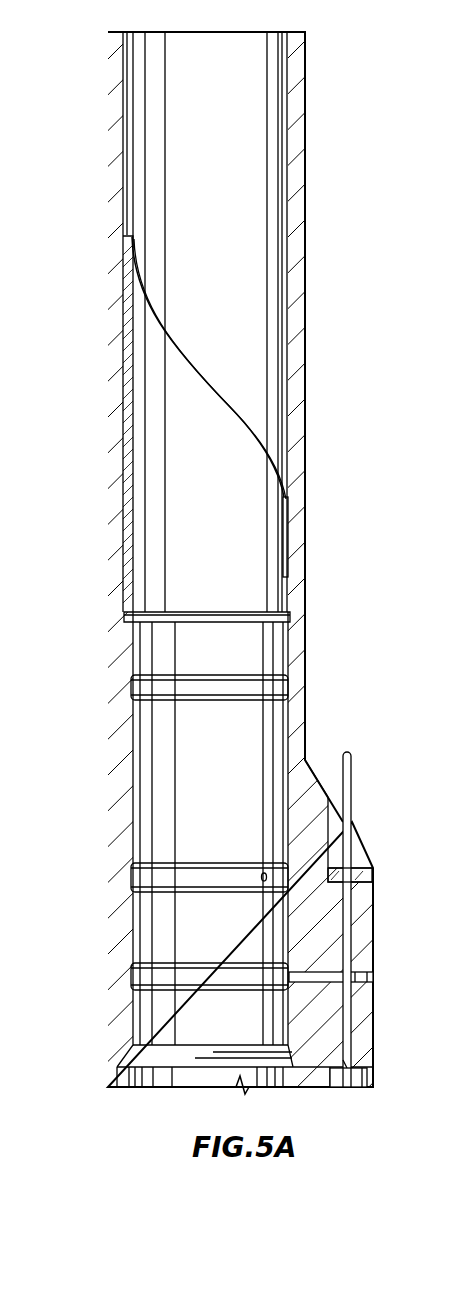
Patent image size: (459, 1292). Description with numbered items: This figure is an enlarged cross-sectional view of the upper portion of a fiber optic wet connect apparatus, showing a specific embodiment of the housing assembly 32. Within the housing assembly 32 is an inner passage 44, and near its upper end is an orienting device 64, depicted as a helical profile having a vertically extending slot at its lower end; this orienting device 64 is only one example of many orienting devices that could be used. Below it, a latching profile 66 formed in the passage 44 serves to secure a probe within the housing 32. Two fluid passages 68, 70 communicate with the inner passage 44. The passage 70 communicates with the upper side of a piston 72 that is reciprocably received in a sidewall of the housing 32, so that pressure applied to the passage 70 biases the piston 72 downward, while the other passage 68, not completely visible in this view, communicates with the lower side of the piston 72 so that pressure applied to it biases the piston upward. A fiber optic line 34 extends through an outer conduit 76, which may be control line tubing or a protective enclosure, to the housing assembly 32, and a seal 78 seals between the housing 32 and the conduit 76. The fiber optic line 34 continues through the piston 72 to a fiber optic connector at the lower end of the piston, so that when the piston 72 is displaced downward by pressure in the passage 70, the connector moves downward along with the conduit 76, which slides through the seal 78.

The housing assembly 32 is at (333, 62).
The fiber optic line 34 is at (366, 1081).
The inner passage 44 is at (163, 795).
The orienting device 64 is at (285, 415).
The latching profile 66 is at (146, 698).
The fluid passage 68 is at (262, 870).
The fluid passage 70 is at (290, 977).
The piston 72 is at (363, 1060).
The outer conduit 76 is at (352, 796).
The seal 78 is at (375, 878).